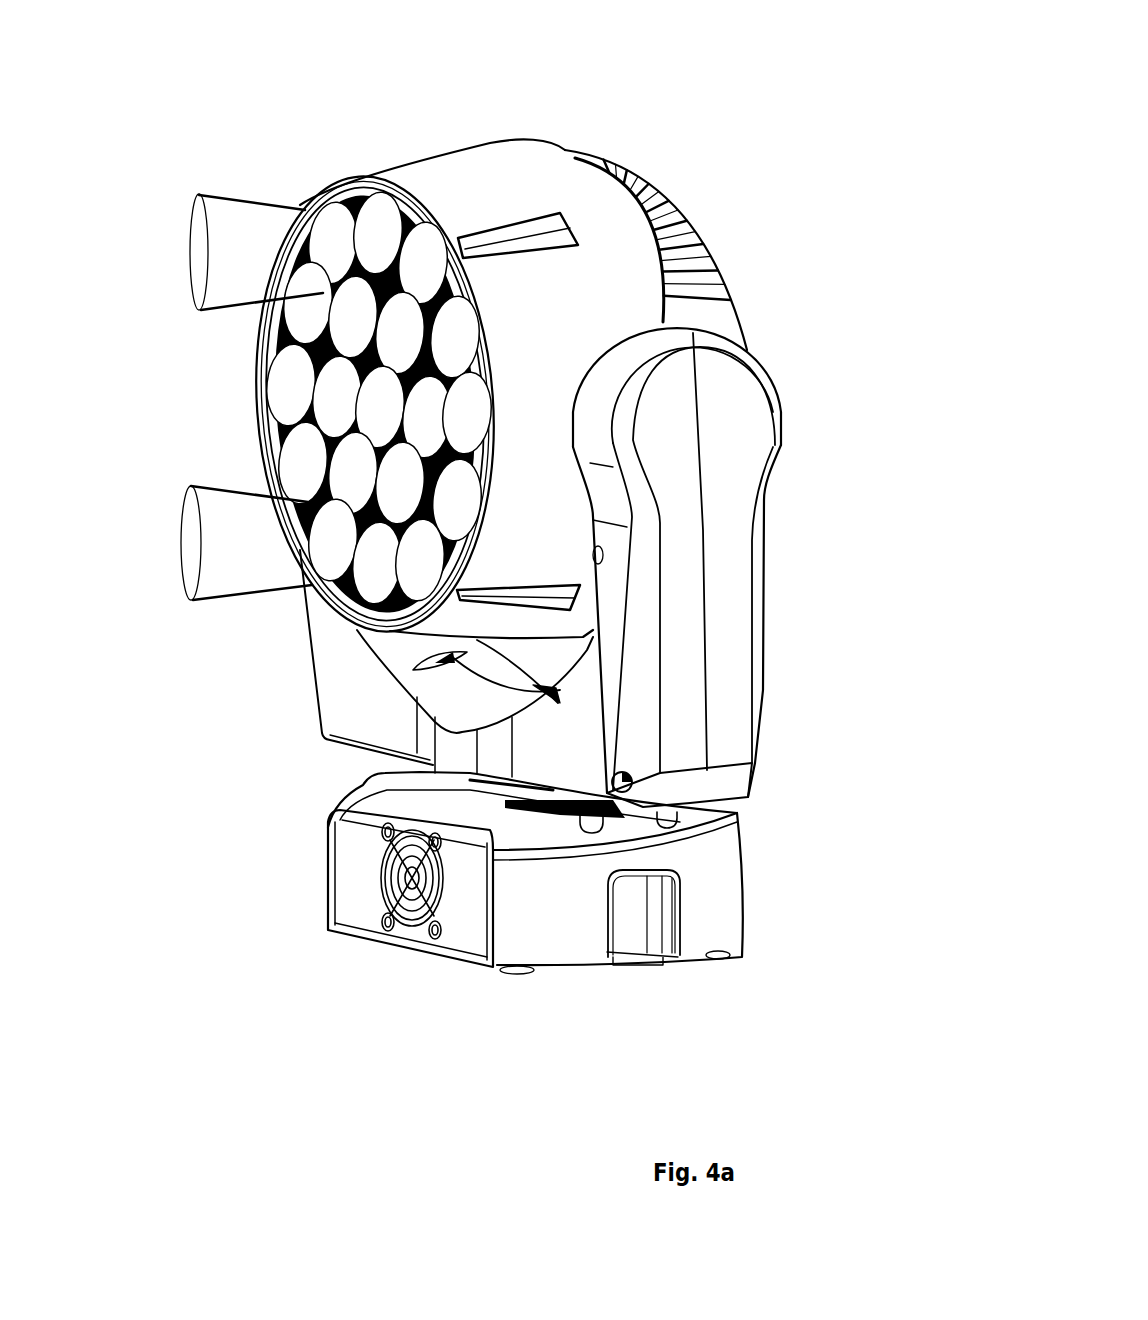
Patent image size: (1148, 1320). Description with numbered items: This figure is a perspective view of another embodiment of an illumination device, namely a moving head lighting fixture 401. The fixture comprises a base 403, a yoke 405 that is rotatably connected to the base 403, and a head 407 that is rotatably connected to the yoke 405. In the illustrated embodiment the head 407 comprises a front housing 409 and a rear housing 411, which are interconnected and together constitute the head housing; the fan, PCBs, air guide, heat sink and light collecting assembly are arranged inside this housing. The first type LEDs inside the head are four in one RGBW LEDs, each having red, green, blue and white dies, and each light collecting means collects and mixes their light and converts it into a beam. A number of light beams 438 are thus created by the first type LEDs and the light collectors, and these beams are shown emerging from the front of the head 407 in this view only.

The moving head lighting fixture 401 is at (274, 60).
The base 403 is at (748, 992).
The yoke 405 is at (774, 707).
The head 407 is at (492, 112).
The front housing 409 is at (443, 173).
The rear housing 411 is at (712, 262).
The light beams 438 is at (238, 195).